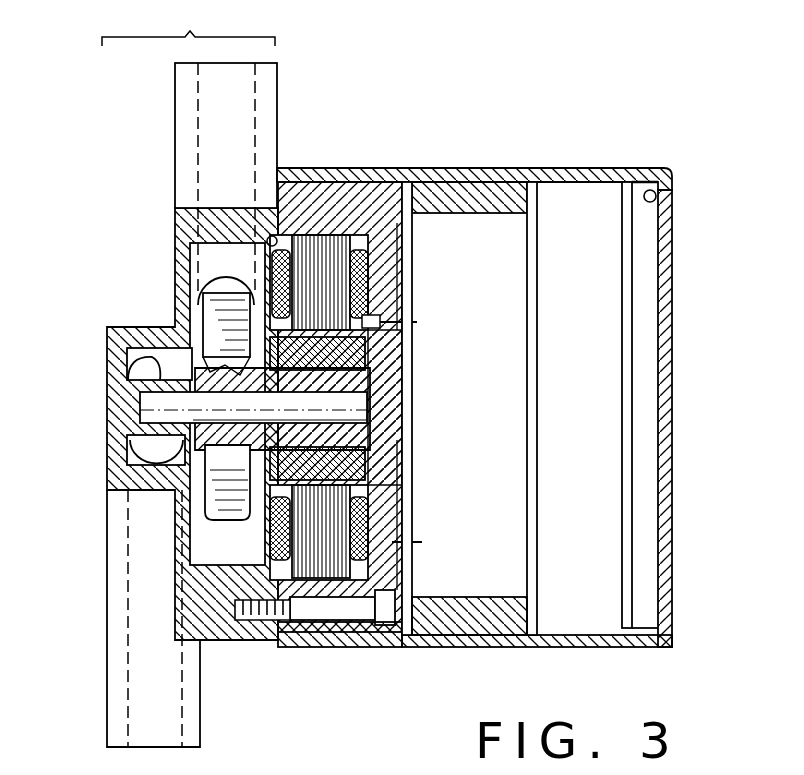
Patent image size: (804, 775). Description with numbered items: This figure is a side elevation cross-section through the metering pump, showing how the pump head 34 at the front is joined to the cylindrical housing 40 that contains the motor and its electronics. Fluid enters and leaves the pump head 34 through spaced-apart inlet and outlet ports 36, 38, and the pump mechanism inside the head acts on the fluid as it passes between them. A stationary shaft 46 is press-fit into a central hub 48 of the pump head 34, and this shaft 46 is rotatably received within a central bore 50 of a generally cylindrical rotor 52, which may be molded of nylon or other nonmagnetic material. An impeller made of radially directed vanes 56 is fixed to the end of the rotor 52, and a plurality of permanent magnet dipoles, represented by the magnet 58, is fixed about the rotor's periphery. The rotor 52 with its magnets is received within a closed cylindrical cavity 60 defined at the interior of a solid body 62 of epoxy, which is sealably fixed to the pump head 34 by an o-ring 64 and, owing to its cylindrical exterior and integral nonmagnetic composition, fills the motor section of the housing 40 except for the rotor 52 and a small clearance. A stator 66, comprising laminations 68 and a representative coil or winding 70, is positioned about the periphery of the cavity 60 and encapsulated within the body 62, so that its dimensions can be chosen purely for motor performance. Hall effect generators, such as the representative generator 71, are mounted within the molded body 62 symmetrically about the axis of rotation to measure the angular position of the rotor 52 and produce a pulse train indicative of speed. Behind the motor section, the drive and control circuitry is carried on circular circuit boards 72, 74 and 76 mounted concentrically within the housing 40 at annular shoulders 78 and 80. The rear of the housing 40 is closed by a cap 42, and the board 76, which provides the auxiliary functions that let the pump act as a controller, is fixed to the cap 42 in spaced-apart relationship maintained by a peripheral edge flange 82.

The pump head 34 is at (188, 24).
The inlet port 36 is at (107, 700).
The outlet port 38 is at (175, 163).
The cylindrical housing 40 is at (473, 172).
The cap 42 is at (673, 323).
The stationary shaft 46 is at (150, 415).
The central hub 48 is at (150, 375).
The central bore 50 is at (190, 398).
The rotor 52 is at (215, 458).
The vanes 56 is at (220, 505).
The magnet 58 is at (400, 356).
The cylindrical cavity 60 is at (402, 468).
The solid body 62 is at (330, 190).
The o-ring 64 is at (258, 206).
The stator 66 is at (293, 590).
The laminations 68 is at (325, 560).
The coil 70 is at (400, 525).
The Hall effect generator 71 is at (395, 295).
The circuit board 72 is at (412, 410).
The circuit board 74 is at (537, 445).
The circuit board 76 is at (625, 335).
The annular shoulder 78 is at (413, 600).
The annular shoulder 80 is at (530, 612).
The peripheral edge flange 82 is at (660, 200).